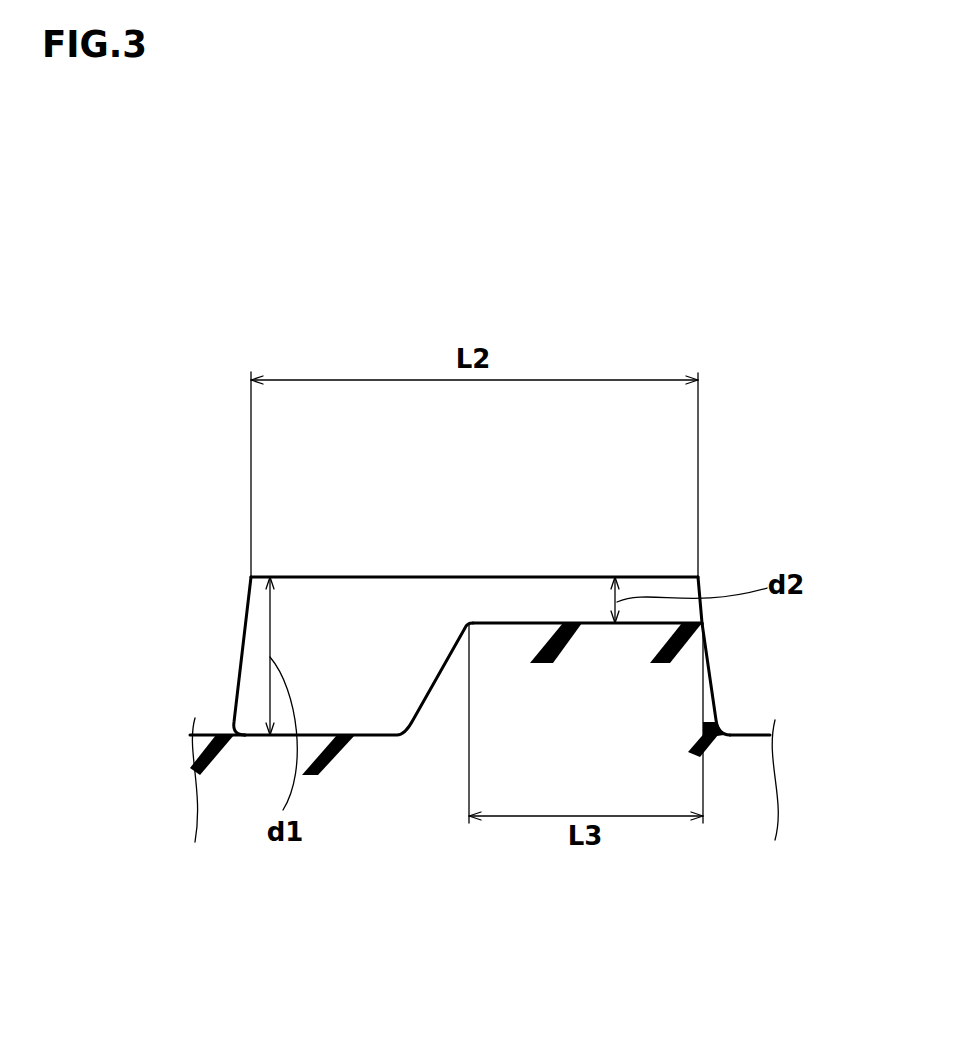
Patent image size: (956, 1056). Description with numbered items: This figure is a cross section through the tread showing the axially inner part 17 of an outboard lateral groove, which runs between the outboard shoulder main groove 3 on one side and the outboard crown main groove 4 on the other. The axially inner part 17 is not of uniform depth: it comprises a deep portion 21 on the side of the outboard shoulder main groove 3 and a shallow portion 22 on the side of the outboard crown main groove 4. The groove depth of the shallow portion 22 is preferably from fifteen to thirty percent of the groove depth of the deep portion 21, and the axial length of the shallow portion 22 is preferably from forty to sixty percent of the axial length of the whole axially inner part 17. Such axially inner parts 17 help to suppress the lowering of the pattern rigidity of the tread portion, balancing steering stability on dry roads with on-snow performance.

The outboard shoulder main groove 3 is at (217, 708).
The outboard crown main groove 4 is at (732, 708).
The axially inner part 17 is at (353, 472).
The deep portion 21 is at (352, 698).
The shallow portion 22 is at (522, 615).